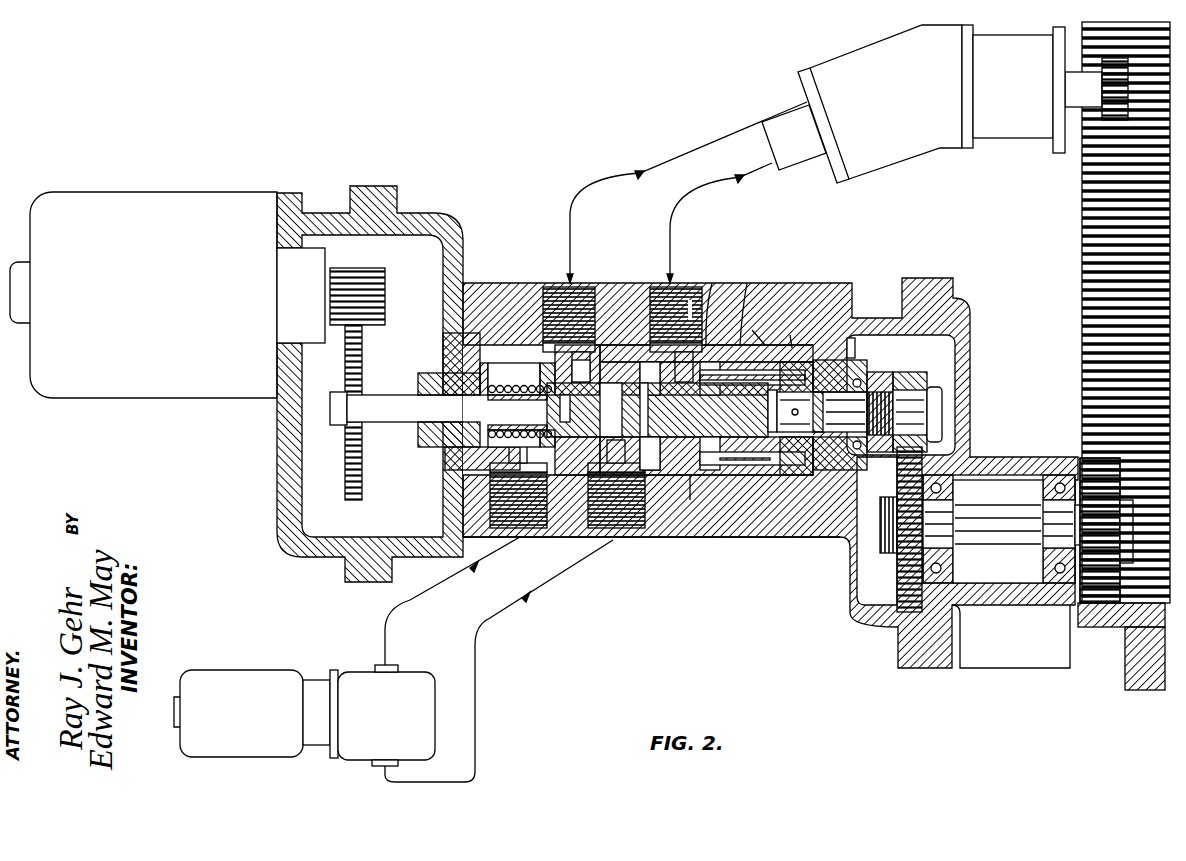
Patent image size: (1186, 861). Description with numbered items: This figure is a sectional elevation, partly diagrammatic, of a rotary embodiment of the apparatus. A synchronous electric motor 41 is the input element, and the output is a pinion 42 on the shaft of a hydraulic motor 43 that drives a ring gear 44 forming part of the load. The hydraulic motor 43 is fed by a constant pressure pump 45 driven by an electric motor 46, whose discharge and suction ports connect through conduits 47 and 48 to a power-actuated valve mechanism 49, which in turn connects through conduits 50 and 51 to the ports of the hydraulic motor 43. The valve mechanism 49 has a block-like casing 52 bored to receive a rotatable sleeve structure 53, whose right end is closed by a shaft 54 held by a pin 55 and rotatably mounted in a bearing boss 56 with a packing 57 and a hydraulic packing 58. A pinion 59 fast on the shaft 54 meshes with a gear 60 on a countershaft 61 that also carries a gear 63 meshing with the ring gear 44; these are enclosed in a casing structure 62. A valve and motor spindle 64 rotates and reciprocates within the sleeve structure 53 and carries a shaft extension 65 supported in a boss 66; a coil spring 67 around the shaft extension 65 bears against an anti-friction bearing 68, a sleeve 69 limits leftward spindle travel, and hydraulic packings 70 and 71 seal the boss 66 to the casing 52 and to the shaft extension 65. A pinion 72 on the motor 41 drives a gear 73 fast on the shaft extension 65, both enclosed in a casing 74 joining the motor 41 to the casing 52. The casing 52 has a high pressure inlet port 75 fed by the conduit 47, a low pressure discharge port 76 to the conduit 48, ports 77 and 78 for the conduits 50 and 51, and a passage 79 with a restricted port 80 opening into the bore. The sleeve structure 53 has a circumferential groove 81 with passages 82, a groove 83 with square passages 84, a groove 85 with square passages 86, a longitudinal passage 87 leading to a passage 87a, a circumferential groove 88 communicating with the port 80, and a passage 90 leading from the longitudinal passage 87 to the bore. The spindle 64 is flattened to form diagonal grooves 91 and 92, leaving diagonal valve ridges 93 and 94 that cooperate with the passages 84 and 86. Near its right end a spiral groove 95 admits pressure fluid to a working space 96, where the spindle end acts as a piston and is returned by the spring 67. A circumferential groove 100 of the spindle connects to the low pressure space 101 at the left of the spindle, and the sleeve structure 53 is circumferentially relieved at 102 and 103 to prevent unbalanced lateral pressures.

The synchronous electric motor 41 is at (188, 388).
The pinion 42 is at (1115, 95).
The hydraulic motor 43 is at (945, 150).
The ring gear 44 is at (1082, 322).
The constant pressure pump 45 is at (345, 680).
The electric motor 46 is at (245, 680).
The conduit 47 is at (480, 638).
The conduit 48 is at (412, 608).
The power-actuated valve mechanism 49 is at (672, 550).
The conduit 50 is at (680, 212).
The conduit 51 is at (616, 180).
The casing 52 is at (808, 272).
The sleeve structure 53 is at (560, 450).
The shaft 54 is at (815, 365).
The pin 55 is at (835, 414).
The bearing boss 56 is at (860, 340).
The packing 57 is at (860, 357).
The hydraulic packing 58 is at (901, 470).
The pinion 59 is at (905, 368).
The gear 60 is at (897, 560).
The countershaft 61 is at (1018, 560).
The casing structure 62 is at (930, 668).
The gear 63 is at (1100, 465).
The valve and motor spindle 64 is at (548, 388).
The shaft extension 65 is at (398, 418).
The bearing boss 66 is at (425, 445).
The coil spring 67 is at (496, 386).
The anti-friction bearing 68 is at (480, 372).
The sleeve 69 is at (505, 396).
The hydraulic packing 70 is at (460, 340).
The hydraulic packing 71 is at (418, 383).
The pinion 72 is at (385, 272).
The gear 73 is at (345, 480).
The casing 74 is at (338, 555).
The high pressure inlet port 75 is at (620, 500).
The low pressure discharge port 76 is at (520, 450).
The port 77 is at (665, 300).
The port 78 is at (586, 285).
The passage 79 is at (688, 525).
The restricted port 80 is at (737, 487).
The circumferential groove 81 is at (530, 500).
The passages 82 is at (650, 360).
The circumferential groove 83 is at (624, 340).
The passages 84 is at (688, 300).
The circumferential groove 85 is at (598, 350).
The passages 86 is at (555, 360).
The longitudinal passage 87 is at (792, 333).
The passage 87a is at (757, 297).
The circumferential groove 88 is at (735, 365).
The passage 90 is at (758, 330).
The diagonally extending transverse grooves 91 is at (614, 410).
The diagonally extending grooves 92 is at (646, 411).
The valve ridges 93 is at (653, 410).
The valve ridges 94 is at (657, 410).
The spiral groove 95 is at (770, 370).
The working space 96 is at (800, 447).
The circumferential groove 100 is at (706, 465).
The low pressure space 101 is at (470, 460).
The circumferential relief 102 is at (715, 305).
The circumferential relief 103 is at (790, 470).